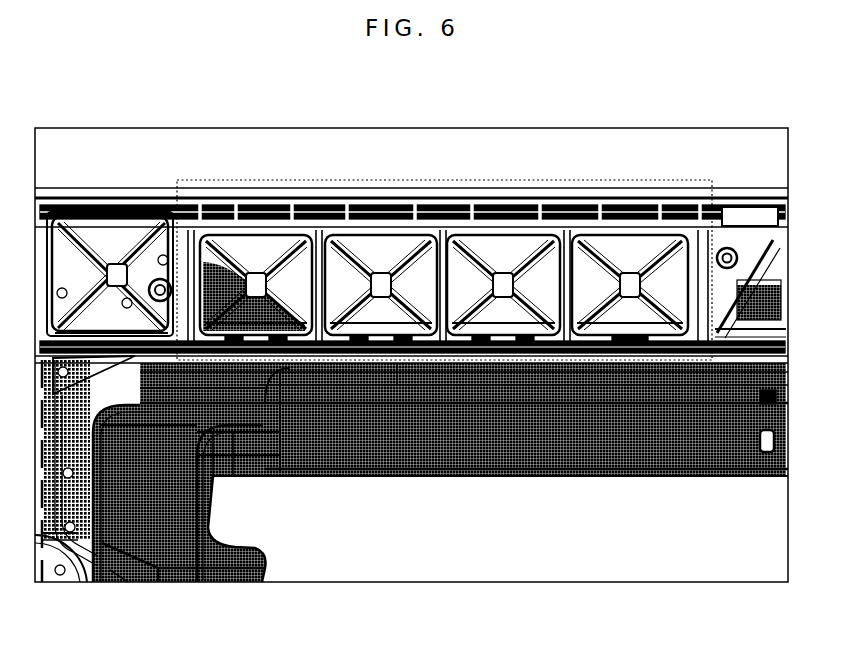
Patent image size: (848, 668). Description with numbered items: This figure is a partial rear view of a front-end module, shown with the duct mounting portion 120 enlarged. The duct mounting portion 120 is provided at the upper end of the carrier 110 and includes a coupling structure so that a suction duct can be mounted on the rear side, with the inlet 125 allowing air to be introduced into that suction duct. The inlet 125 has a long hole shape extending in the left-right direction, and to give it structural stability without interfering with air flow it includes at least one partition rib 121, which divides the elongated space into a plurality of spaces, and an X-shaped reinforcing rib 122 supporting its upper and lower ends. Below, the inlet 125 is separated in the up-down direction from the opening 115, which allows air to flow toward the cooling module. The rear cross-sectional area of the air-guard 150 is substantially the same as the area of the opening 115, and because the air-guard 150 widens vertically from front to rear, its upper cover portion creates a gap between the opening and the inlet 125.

The carrier 110 is at (68, 505).
The opening 115 is at (287, 535).
The duct mounting portion 120 is at (455, 180).
The partition rib 121 is at (318, 282).
The reinforcing rib 122 is at (345, 300).
The inlet 125 is at (553, 245).
The air-guard 150 is at (444, 447).